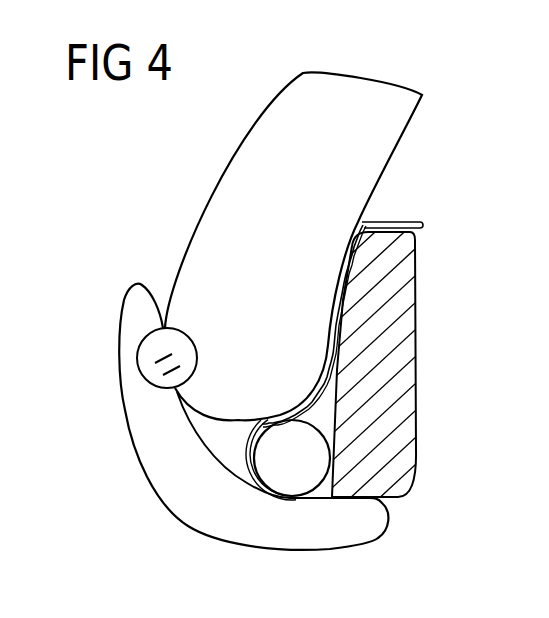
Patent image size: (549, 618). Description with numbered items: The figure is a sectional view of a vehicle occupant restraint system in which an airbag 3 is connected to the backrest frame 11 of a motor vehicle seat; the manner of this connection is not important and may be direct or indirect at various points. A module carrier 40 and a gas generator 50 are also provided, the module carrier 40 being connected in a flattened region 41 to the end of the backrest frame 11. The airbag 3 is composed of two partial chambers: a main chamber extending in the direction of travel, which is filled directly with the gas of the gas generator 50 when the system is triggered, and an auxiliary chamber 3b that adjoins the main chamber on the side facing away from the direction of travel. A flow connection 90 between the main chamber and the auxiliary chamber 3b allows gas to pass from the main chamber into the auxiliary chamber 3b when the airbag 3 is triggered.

The airbag 3 is at (172, 224).
The auxiliary chamber 3b is at (152, 480).
The backrest frame 11 is at (397, 388).
The module carrier 40 is at (243, 450).
The flattened region 41 is at (402, 221).
The gas generator 50 is at (292, 480).
The flow connection 90 is at (186, 350).